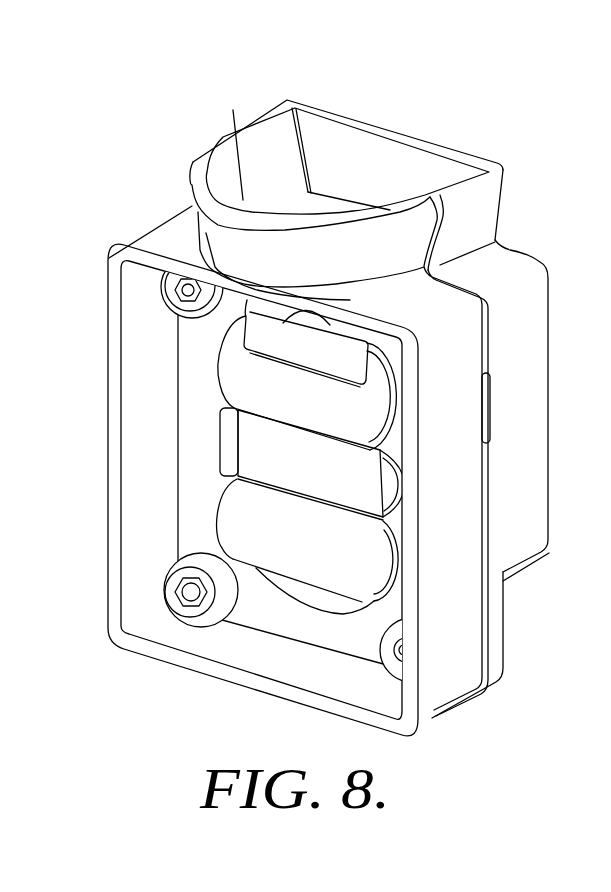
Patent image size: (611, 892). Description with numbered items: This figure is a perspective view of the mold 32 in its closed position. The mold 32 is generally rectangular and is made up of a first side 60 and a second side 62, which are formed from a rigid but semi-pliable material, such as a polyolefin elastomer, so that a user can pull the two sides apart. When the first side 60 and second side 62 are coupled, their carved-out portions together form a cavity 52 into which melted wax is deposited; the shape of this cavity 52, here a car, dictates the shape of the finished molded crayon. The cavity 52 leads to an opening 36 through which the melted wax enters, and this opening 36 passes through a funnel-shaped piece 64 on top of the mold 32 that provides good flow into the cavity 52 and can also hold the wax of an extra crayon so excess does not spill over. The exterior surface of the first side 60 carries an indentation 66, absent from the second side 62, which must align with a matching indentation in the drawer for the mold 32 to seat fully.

The mold 32 is at (161, 102).
The opening 36 is at (343, 148).
The cavity 52 is at (300, 203).
The first side 60 is at (535, 302).
The second side 62 is at (152, 243).
The funnel-shaped piece 64 is at (485, 207).
The indentation 66 is at (536, 591).